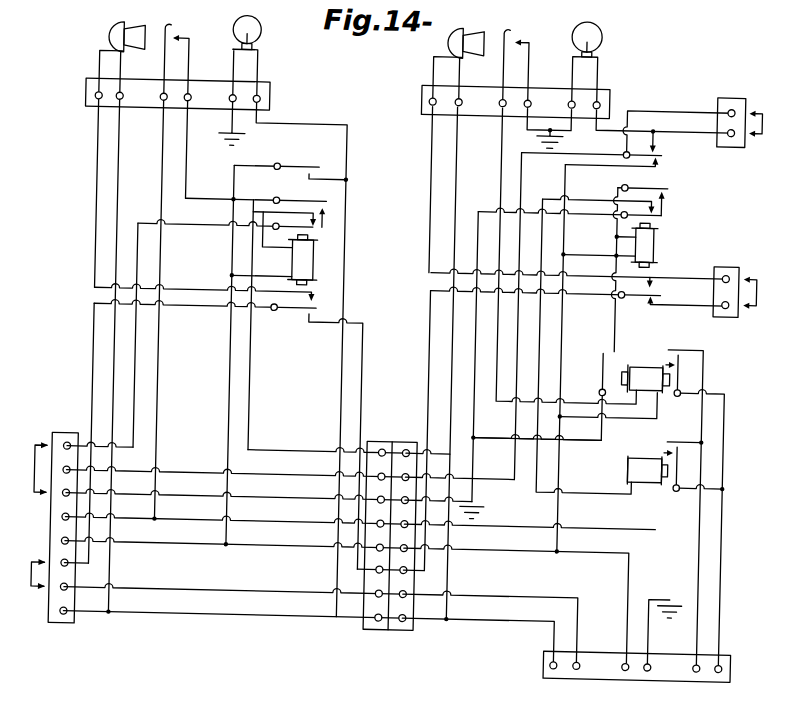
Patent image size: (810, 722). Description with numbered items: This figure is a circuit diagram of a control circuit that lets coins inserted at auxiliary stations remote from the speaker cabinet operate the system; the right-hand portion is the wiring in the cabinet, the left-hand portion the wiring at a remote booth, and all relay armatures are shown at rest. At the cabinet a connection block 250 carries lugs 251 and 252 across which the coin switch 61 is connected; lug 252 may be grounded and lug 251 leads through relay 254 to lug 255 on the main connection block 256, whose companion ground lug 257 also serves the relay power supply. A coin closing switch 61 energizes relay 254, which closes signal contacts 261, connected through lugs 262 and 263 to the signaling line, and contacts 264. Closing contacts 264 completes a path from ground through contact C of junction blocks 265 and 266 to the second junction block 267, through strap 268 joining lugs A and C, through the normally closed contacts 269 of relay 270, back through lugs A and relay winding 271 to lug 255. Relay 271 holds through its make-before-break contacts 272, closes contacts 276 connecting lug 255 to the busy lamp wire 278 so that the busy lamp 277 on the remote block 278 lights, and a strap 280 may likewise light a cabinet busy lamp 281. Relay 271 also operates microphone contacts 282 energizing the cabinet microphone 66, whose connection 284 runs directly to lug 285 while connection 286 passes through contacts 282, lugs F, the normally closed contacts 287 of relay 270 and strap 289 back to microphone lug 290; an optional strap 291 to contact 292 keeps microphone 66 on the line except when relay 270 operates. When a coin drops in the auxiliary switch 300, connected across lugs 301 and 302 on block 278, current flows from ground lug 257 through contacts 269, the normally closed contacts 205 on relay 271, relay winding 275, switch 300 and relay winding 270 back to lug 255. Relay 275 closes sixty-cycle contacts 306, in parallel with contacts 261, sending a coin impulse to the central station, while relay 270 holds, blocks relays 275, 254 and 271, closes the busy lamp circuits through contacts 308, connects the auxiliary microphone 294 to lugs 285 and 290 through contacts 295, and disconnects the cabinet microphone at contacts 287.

The auxiliary microphone 294 is at (102, 44).
The single coin auxiliary switch 300 is at (163, 33).
The busy lamp 277 is at (254, 34).
The block 278 is at (265, 100).
The lug 301 is at (156, 106).
The lug 302 is at (183, 105).
The contacts 308 is at (326, 160).
The normally closed contacts 269 is at (322, 232).
The relay 270 is at (291, 266).
The contacts 295 is at (313, 303).
The normally closed contacts 287 is at (304, 318).
The second junction block 267 is at (76, 431).
The strap 268 is at (37, 478).
The strap 289 is at (36, 582).
The junction block 266 is at (376, 441).
The junction block 265 is at (406, 441).
The microphone 66 is at (456, 30).
The coin switch 61 is at (500, 29).
The lug 251 is at (497, 98).
The lug 252 is at (522, 98).
The connection block 250 is at (608, 98).
The cabinet busy lamp 281 is at (595, 33).
The microphone connection 284 is at (453, 156).
The microphone connection 286 is at (426, 160).
The strap 280 is at (757, 106).
The contacts 276 is at (657, 157).
The make-before-break contacts 272 is at (661, 187).
The switch 205 is at (660, 209).
The relay 271 is at (645, 236).
The strap 291 is at (755, 285).
The microphone contacts 282 is at (651, 287).
The contact 292 is at (649, 301).
The contacts 264 is at (606, 352).
The relay 254 is at (648, 357).
The signal contacts 261 is at (681, 366).
The relay 275 is at (649, 443).
The sixty-cycle contacts 306 is at (681, 485).
The main connection block 256 is at (550, 665).
The lug 285 is at (559, 668).
The microphone lug 290 is at (583, 668).
The lug 255 is at (632, 668).
The lug 257 is at (654, 668).
The lug 262 is at (703, 668).
The lug 263 is at (726, 668).